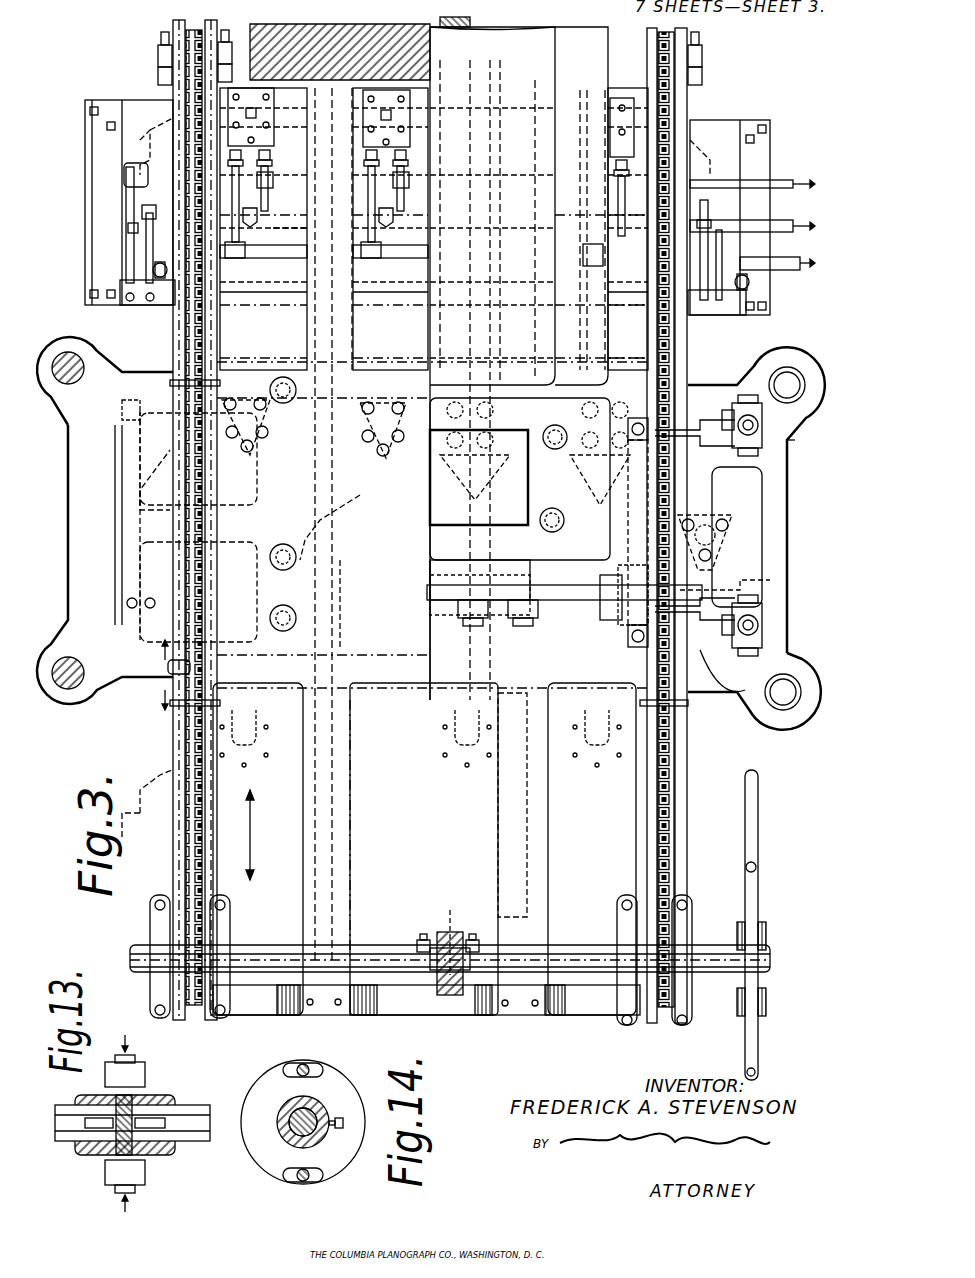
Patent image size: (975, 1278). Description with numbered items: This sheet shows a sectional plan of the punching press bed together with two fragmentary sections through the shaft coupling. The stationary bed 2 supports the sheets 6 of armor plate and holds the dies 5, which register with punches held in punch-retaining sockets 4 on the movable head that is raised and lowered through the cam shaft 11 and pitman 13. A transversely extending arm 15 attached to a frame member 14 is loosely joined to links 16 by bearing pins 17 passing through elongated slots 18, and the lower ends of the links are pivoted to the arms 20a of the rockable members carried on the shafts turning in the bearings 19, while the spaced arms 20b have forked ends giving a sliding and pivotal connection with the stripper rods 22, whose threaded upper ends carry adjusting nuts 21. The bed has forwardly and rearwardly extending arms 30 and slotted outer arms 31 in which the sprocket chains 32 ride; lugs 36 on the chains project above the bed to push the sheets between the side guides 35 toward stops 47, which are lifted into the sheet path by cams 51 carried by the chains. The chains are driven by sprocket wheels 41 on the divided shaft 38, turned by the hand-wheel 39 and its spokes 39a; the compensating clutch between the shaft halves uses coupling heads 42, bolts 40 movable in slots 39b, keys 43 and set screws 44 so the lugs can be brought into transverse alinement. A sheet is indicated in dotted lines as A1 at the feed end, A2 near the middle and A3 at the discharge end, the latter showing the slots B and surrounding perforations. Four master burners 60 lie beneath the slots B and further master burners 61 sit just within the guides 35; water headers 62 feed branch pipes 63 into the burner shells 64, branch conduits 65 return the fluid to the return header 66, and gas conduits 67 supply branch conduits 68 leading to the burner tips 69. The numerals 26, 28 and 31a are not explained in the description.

In FIG. 3, the stationary bed 2 is at (68, 540).
In FIG. 3, the punch-retaining sockets 4 is at (455, 470).
In FIG. 3, the dies 5 is at (800, 320).
In FIG. 3, the sheets 6 is at (370, 660).
In FIG. 3, the cam shaft 11 is at (460, 40).
In FIG. 3, the pitman 13 is at (410, 942).
In FIG. 3, the frame member 14 is at (560, 575).
In FIG. 13, the frame member 14 is at (136, 1116).
In FIG. 3, the transversely extending arm 15 is at (548, 600).
In FIG. 3, the links 16 is at (605, 612).
In FIG. 3, the bearing pins 17 is at (625, 625).
In FIG. 3, the elongated slots 18 is at (163, 664).
In FIG. 3, the bearings 19 is at (640, 647).
In FIG. 3, the arm 20a is at (706, 428).
In FIG. 3, the arm 20b is at (660, 600).
In FIG. 3, the nuts 21 is at (762, 425).
In FIG. 3, the stripper rods 22 is at (762, 432).
In FIG. 3, the stop 26 is at (122, 410).
In FIG. 3, the pin 28 is at (796, 446).
In FIG. 3, the arms 30 is at (348, 815).
In FIG. 3, the outer arms 31 is at (262, 322).
In FIG. 3, the side plate extension 31a is at (182, 500).
In FIG. 3, the sprocket chains 32 is at (200, 455).
In FIG. 3, the guides 35 is at (118, 150).
In FIG. 3, the lugs 36 is at (186, 392).
In FIG. 3, the shaft 38 is at (250, 985).
In FIG. 3, the hand-wheel 39 is at (765, 955).
In FIG. 3, the spokes 39a is at (758, 838).
In FIG. 14, the slots 39b is at (285, 1072).
In FIG. 3, the bolts 40 is at (457, 995).
In FIG. 13, the bolts 40 is at (146, 1078).
In FIG. 14, the bolts 40 is at (300, 1068).
In FIG. 3, the sprocket wheels 41 is at (205, 1000).
In FIG. 13, the heads 42 is at (78, 1150).
In FIG. 14, the heads 42 is at (330, 1075).
In FIG. 13, the keys 43 is at (100, 1128).
In FIG. 14, the keys 43 is at (280, 1120).
In FIG. 3, the set screws 44 is at (425, 938).
In FIG. 14, the set screws 44 is at (340, 1130).
In FIG. 3, the stops 47 is at (170, 668).
In FIG. 3, the cams 51 is at (175, 382).
In FIG. 3, the master burners 60 is at (252, 95).
In FIG. 3, the master burners 61 is at (152, 305).
In FIG. 3, the water conduits 62 is at (790, 172).
In FIG. 3, the branch pipes 63 is at (275, 178).
In FIG. 3, the burner shells 64 is at (132, 302).
In FIG. 3, the branch conduits 65 is at (152, 268).
In FIG. 3, the return header 66 is at (517, 269).
In FIG. 3, the gas conducting conduits 67 is at (544, 216).
In FIG. 3, the branch conduits 68 is at (142, 220).
In FIG. 3, the burner tips 69 is at (268, 126).
In FIG. 3, the sheet A1 is at (145, 140).
In FIG. 3, the sheet A2 is at (165, 440).
In FIG. 3, the sheet A3 is at (150, 775).
In FIG. 3, the slots B is at (632, 545).